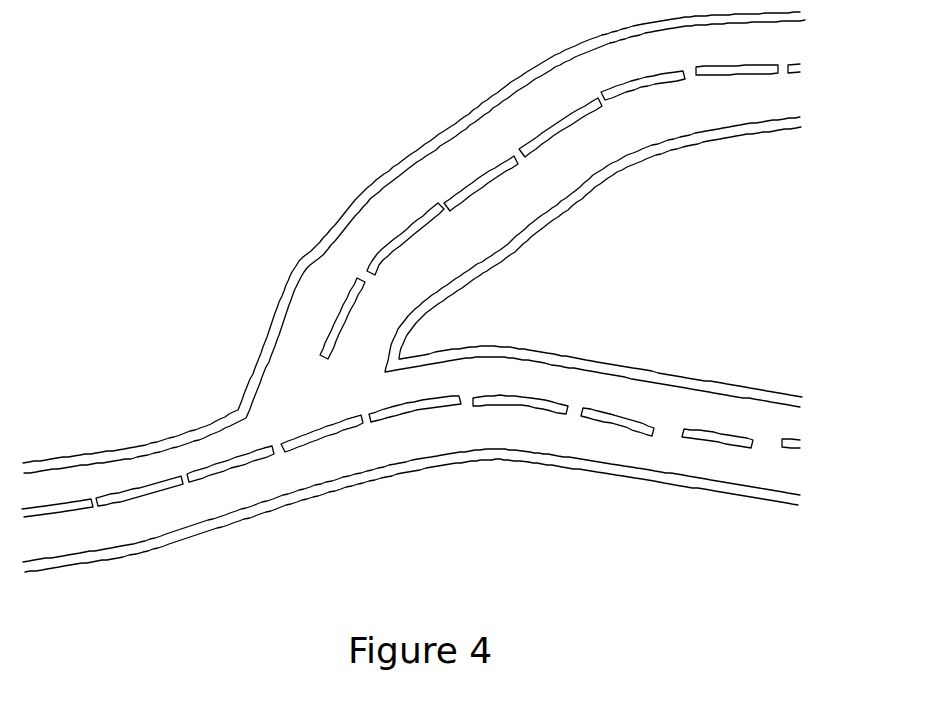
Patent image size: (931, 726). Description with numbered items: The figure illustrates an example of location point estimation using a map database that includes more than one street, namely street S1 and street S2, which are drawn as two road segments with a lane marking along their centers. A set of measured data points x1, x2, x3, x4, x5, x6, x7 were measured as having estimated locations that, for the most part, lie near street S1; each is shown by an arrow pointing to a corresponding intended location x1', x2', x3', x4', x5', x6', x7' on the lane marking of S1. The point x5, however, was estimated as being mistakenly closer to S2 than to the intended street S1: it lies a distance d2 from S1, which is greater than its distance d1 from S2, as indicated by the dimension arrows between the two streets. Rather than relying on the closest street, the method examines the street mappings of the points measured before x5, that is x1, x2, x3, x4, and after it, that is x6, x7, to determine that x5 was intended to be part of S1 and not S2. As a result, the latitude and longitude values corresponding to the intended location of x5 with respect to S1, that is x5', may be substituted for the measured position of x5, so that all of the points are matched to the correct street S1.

The measured data point x1 is at (64, 568).
The measured data point x2 is at (193, 548).
The measured data point x3 is at (333, 500).
The measured data point x4 is at (474, 474).
The measured data point x5 is at (569, 281).
The measured data point x6 is at (664, 499).
The measured data point x7 is at (761, 367).
The intended location x1' is at (131, 500).
The intended location x2' is at (226, 473).
The intended location x3' is at (371, 424).
The intended location x4' is at (514, 404).
The intended location x5' is at (609, 418).
The intended location x6' is at (702, 430).
The intended location x7' is at (773, 442).
The distance d1 is at (585, 222).
The distance d2 is at (585, 342).
The street S1 is at (411, 510).
The street S2 is at (414, 242).